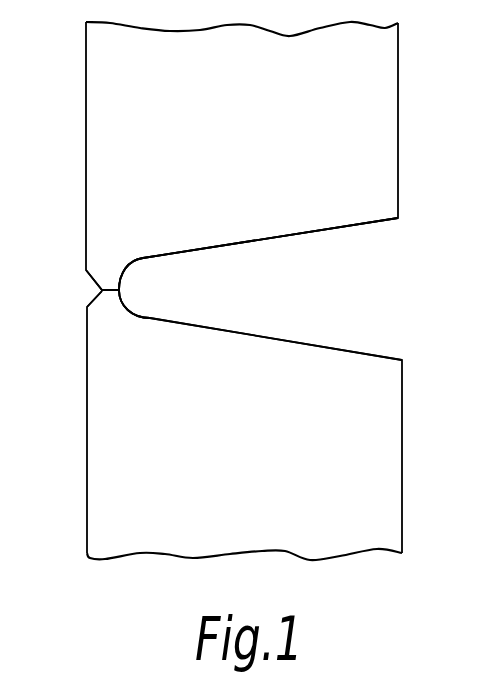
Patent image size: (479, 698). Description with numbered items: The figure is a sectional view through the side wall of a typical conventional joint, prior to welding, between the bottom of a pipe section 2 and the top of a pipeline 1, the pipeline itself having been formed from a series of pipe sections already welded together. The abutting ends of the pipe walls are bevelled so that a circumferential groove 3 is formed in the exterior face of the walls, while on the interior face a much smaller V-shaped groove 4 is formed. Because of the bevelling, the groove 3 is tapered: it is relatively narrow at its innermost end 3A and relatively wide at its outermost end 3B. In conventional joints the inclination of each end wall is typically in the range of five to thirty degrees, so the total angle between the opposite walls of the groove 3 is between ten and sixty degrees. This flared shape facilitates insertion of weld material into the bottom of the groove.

The pipeline 1 is at (388, 488).
The pipe section 2 is at (383, 68).
The circumferential groove 3 is at (289, 303).
The innermost end of groove 3A is at (163, 296).
The outermost end of groove 3B is at (340, 262).
The V-shaped groove 4 is at (102, 290).